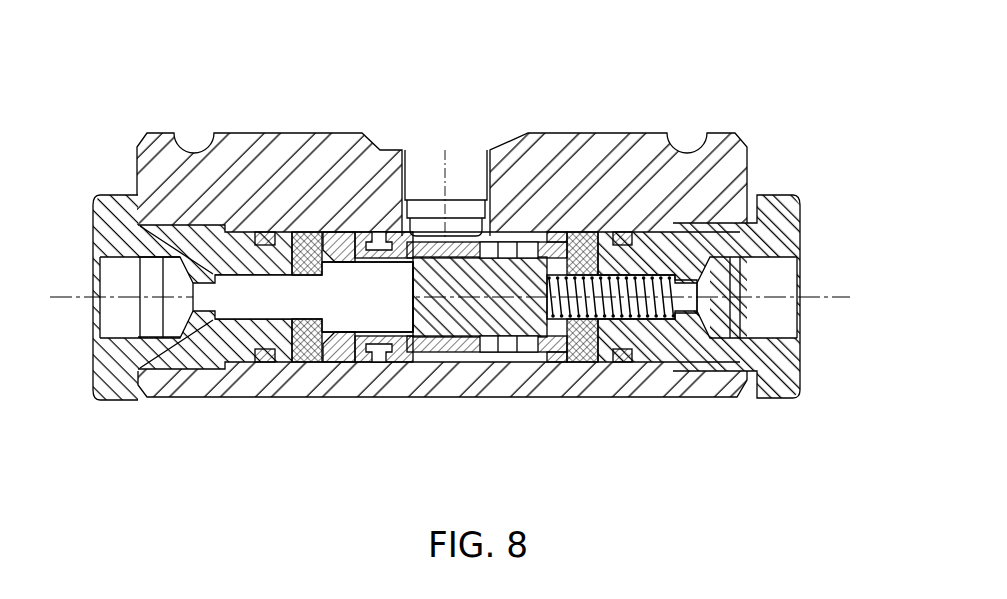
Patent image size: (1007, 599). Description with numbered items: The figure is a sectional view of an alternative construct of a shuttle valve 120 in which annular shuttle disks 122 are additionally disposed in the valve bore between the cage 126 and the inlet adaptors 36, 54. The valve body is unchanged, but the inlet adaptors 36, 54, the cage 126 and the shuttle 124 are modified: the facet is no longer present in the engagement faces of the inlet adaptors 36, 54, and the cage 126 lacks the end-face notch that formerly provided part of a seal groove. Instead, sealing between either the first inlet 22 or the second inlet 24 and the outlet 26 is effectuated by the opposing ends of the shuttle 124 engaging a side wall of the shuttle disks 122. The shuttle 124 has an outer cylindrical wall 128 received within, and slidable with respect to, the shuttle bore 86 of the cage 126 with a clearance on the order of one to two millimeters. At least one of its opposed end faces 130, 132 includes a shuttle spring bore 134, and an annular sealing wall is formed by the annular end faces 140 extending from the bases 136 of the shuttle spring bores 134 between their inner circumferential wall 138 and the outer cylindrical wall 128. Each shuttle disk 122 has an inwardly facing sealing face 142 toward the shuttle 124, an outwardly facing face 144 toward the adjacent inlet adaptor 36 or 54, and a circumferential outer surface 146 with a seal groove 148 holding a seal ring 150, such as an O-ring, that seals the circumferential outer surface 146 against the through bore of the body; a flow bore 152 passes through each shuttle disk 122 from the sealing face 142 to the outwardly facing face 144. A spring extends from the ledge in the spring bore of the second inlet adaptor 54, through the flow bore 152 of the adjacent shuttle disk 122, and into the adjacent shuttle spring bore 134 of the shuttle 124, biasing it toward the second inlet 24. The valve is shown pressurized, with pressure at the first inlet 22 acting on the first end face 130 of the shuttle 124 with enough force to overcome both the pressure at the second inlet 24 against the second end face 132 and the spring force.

The outlet 26 is at (463, 53).
The shuttle valve 120 is at (678, 115).
The first inlet 22 is at (115, 318).
The second inlet 24 is at (778, 280).
The inlet adaptor 36 is at (112, 388).
The second inlet adaptor 54 is at (782, 390).
The flow bore 152 is at (205, 228).
The circumferential outer surface 146 is at (265, 232).
The seal 150 is at (303, 232).
The seal groove 148 is at (335, 232).
The shuttle bore 86 is at (305, 288).
The inner circumferential wall 138 is at (385, 245).
The annular end face 140 is at (430, 250).
The cage 126 is at (492, 250).
The second end face 132 is at (582, 245).
The shuttle disk 122 is at (622, 240).
The outwardly facing face 144 is at (290, 358).
The sealing face 142 is at (332, 352).
The first end face 130 is at (387, 295).
The shuttle spring bore 134 is at (403, 305).
The shuttle 124 is at (468, 318).
The outer cylindrical wall 128 is at (548, 300).
The base 136 is at (557, 355).